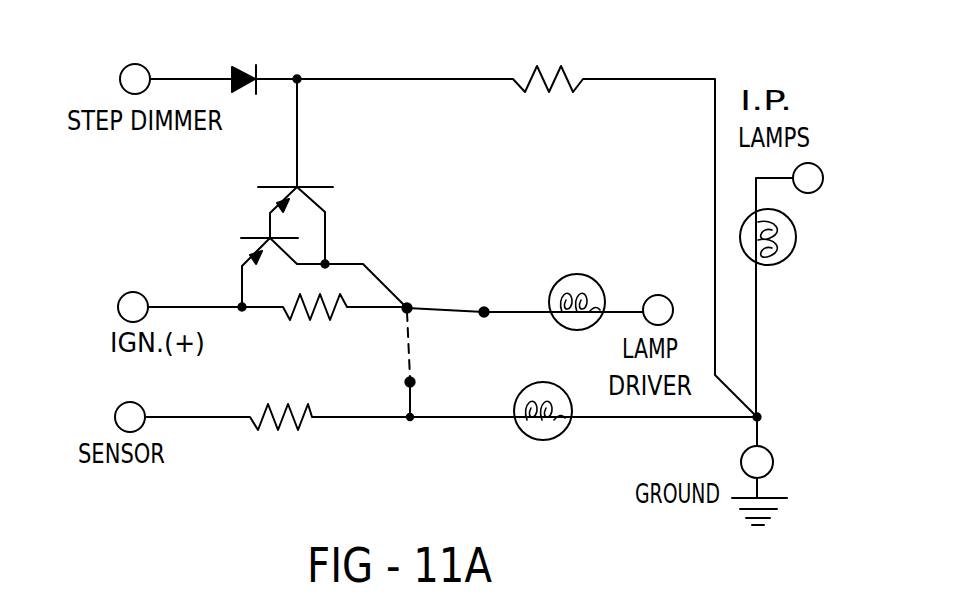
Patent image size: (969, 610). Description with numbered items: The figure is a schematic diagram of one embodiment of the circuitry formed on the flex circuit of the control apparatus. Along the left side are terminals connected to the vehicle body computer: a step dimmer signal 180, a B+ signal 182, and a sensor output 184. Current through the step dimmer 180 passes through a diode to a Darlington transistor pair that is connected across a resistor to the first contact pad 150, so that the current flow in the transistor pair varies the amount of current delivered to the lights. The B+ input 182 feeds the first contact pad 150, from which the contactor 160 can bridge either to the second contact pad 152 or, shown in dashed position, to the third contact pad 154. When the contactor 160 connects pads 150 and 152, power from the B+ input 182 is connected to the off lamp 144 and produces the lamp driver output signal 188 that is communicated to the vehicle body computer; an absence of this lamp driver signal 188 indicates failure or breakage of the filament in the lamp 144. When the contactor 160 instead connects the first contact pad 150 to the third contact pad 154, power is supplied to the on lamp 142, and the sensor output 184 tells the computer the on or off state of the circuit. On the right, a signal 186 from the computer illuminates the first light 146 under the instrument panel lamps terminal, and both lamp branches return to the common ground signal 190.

The step dimmer signal 180 is at (135, 72).
The B+ signal 182 is at (133, 300).
The sensor output 184 is at (130, 410).
The first contact pad 150 is at (409, 322).
The second contact pad 152 is at (484, 305).
The contactor 160 is at (449, 278).
The third contact pad 154 is at (405, 385).
The off lamp 144 is at (572, 275).
The lamp driver signal 188 is at (661, 305).
The signal to first light 186 is at (812, 184).
The first light 146 is at (788, 258).
The on lamp 142 is at (542, 440).
The ground signal 190 is at (765, 462).